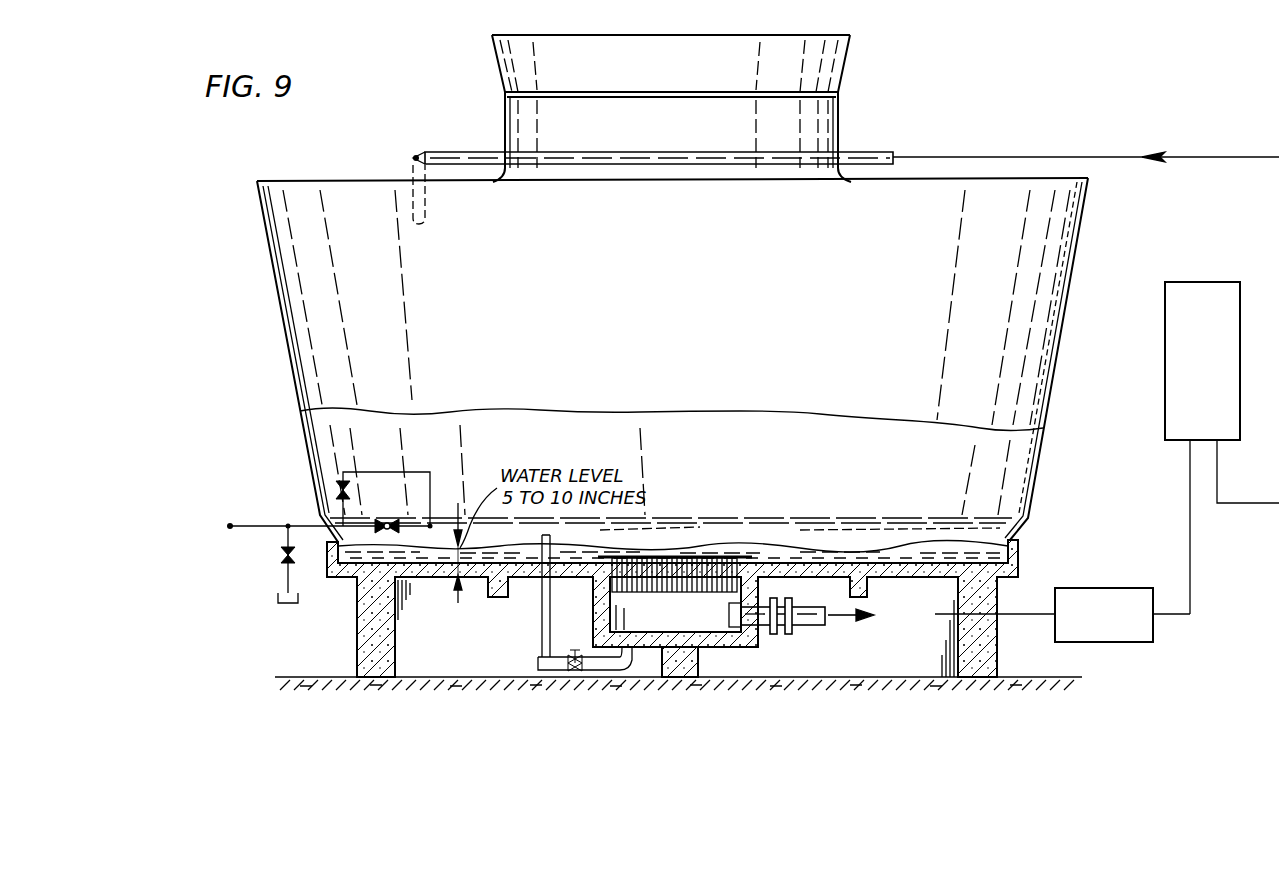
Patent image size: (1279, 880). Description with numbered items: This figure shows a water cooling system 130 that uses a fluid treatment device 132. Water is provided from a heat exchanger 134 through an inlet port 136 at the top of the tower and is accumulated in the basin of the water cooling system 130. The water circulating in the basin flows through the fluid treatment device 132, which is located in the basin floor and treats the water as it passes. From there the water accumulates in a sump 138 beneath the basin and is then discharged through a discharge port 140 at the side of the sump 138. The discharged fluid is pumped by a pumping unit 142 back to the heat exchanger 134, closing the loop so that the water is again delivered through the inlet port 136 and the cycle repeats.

The water cooling system 130 is at (908, 77).
The fluid treatment device 132 is at (712, 551).
The heat exchanger 134 is at (1165, 312).
The inlet port 136 is at (871, 156).
The sump 138 is at (657, 610).
The discharge port 140 is at (810, 620).
The pumping unit 142 is at (1102, 643).